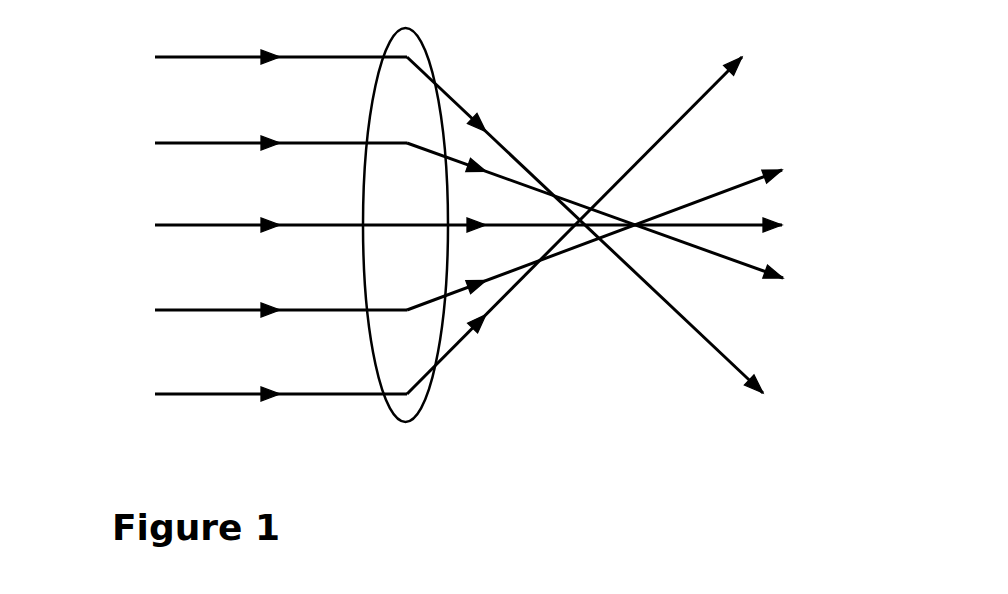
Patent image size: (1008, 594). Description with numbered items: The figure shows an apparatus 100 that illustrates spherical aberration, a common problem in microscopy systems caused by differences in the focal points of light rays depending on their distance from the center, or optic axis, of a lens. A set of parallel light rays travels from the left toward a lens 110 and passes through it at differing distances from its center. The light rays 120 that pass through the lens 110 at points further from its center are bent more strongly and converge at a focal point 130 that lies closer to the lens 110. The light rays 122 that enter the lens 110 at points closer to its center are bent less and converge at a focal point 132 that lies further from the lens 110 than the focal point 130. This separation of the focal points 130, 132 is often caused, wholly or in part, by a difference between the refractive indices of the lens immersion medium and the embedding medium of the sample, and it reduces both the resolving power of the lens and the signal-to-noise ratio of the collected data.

The apparatus 100 is at (783, 48).
The lens 110 is at (407, 113).
The light rays 120 is at (323, 402).
The light rays 122 is at (178, 320).
The focal point 130 is at (575, 238).
The focal point 132 is at (640, 238).